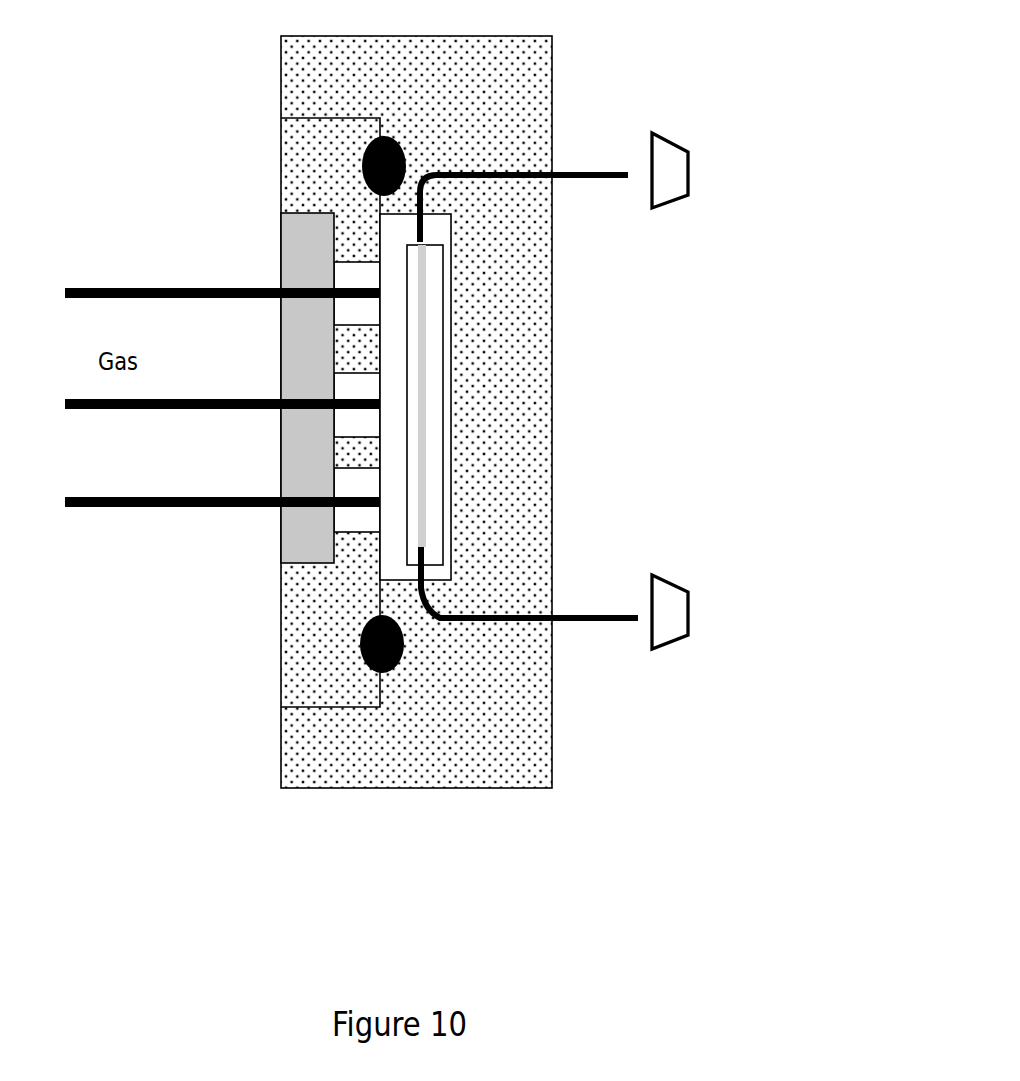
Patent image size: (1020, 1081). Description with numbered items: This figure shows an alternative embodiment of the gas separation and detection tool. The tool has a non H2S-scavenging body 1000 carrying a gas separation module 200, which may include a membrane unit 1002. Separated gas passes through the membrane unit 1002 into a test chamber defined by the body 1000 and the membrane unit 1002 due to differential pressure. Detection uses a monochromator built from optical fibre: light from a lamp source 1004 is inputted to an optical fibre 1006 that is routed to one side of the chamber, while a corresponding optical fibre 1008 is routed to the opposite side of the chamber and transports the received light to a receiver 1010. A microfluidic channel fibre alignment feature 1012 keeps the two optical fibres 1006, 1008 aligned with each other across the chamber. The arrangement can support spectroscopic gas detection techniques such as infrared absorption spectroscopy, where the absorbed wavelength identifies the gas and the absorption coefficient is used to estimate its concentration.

The body 1000 is at (513, 729).
The membrane unit 1002 is at (295, 625).
The gas separation module 200 is at (297, 258).
The microfluidic channel fibre alignment feature 1012 is at (432, 388).
The optical fibre 1006 is at (524, 214).
The lamp source 1004 is at (718, 207).
The optical fibre 1008 is at (529, 620).
The receiver 1010 is at (701, 638).